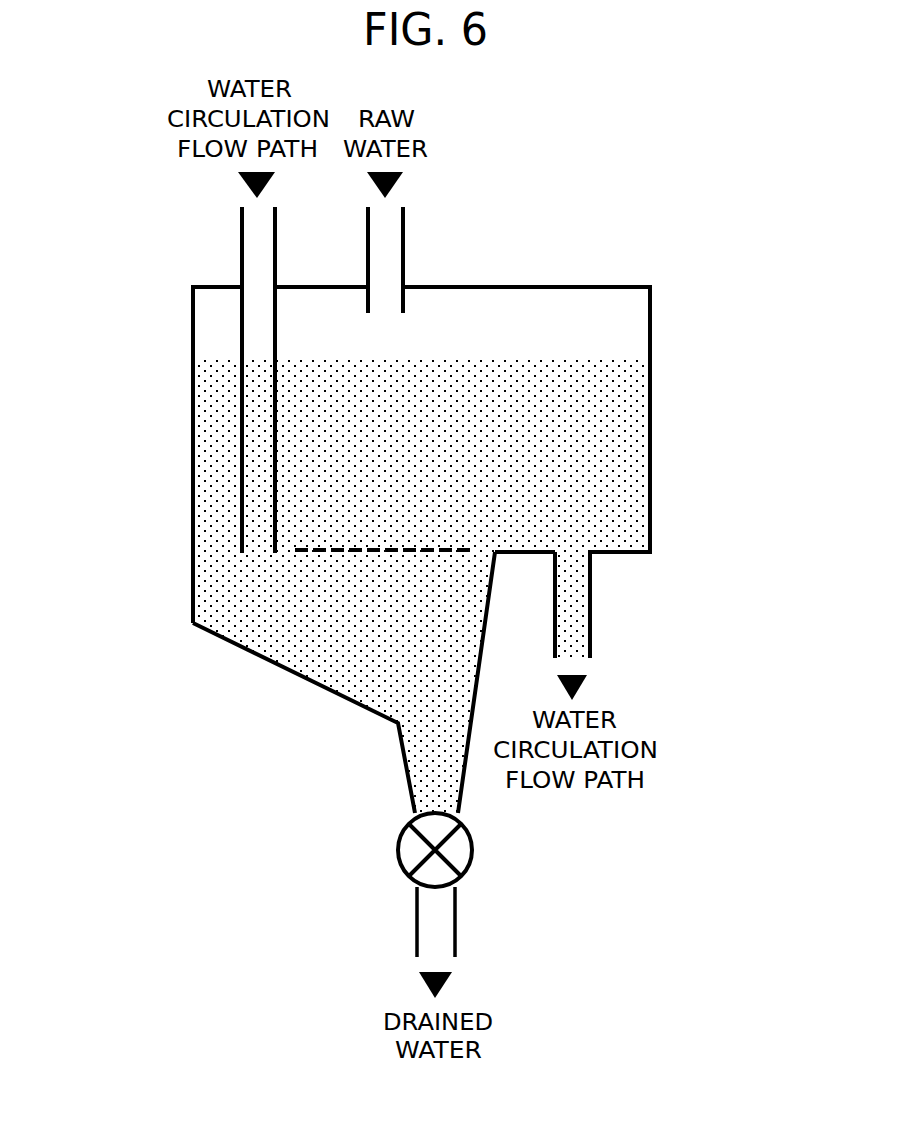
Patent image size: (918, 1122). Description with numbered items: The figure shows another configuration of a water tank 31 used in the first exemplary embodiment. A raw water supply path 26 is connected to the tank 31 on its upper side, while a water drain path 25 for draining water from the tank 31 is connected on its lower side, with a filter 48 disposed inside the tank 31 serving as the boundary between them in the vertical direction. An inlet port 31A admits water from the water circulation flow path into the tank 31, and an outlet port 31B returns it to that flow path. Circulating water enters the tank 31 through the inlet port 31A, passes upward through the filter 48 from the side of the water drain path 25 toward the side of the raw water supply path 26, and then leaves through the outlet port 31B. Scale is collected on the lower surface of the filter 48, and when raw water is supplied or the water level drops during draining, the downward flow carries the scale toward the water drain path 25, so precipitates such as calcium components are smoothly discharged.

The raw water supply path 26 is at (407, 232).
The tank 31 is at (652, 430).
The inlet port 31A is at (257, 548).
The outlet port 31B is at (578, 563).
The filter 48 is at (320, 560).
The water drain path 25 is at (425, 773).